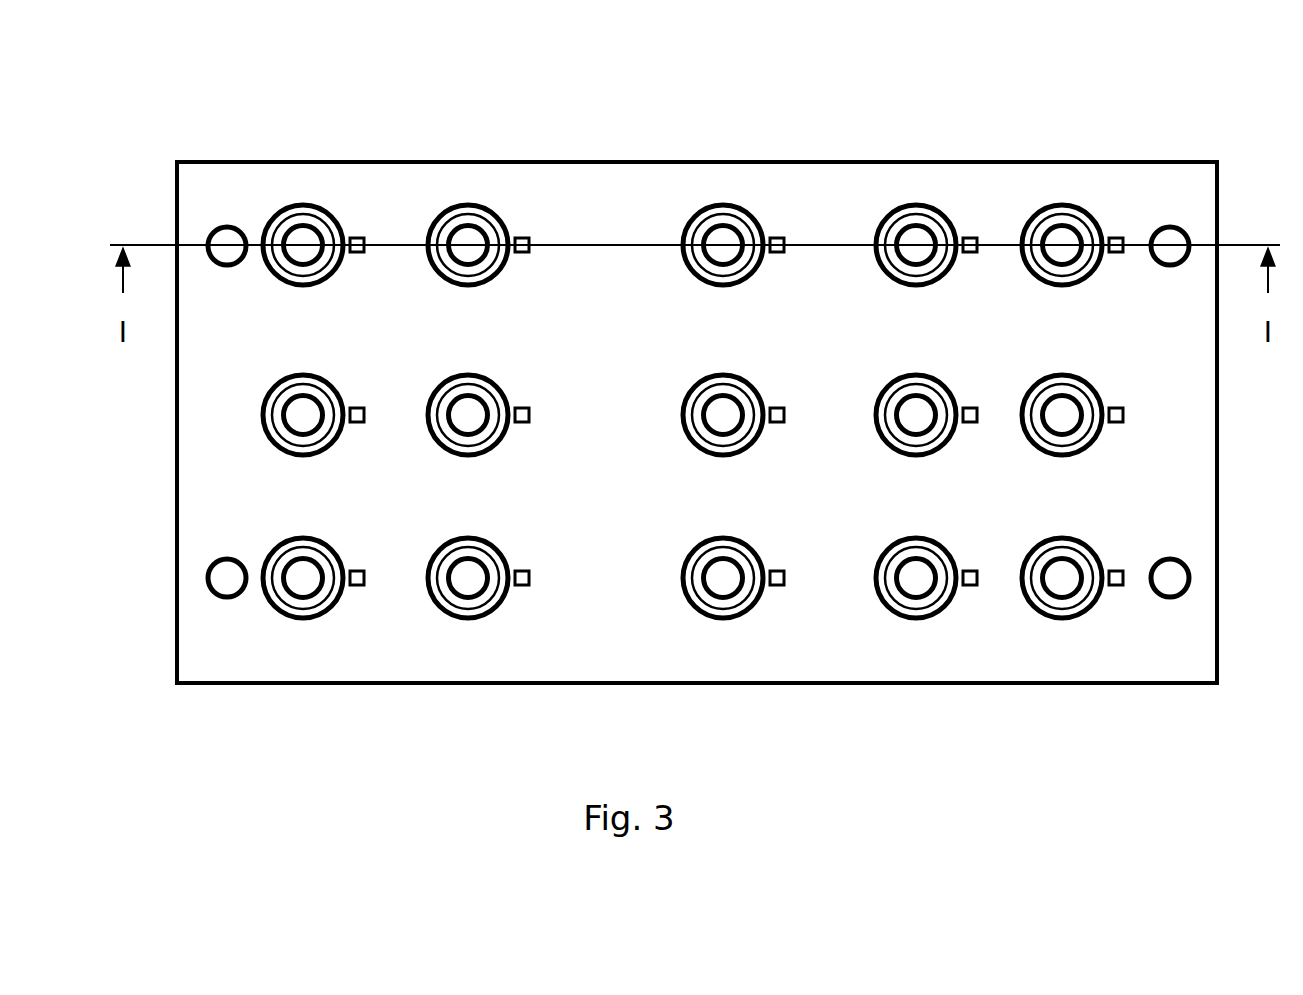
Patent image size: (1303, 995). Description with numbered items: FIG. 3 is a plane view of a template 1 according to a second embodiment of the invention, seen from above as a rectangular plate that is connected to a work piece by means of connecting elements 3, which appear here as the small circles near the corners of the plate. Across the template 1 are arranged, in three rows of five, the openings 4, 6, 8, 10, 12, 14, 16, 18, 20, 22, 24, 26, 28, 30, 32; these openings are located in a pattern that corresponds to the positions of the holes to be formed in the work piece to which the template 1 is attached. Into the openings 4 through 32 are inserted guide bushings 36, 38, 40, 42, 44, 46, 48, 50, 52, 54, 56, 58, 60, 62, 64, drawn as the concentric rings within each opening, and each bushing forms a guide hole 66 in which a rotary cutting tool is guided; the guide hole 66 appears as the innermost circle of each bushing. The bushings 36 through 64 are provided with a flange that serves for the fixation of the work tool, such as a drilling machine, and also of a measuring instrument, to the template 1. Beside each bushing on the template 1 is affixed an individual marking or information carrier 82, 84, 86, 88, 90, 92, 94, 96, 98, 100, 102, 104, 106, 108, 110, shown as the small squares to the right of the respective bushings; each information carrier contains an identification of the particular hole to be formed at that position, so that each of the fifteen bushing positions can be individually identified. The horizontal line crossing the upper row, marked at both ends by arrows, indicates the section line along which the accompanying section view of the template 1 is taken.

The template 1 is at (1183, 162).
The connecting element 3 is at (213, 235).
The opening 4 is at (293, 191).
The opening 6 is at (458, 196).
The opening 8 is at (713, 195).
The opening 10 is at (900, 195).
The opening 12 is at (1054, 195).
The opening 14 is at (289, 391).
The opening 16 is at (453, 391).
The opening 18 is at (707, 391).
The opening 20 is at (900, 391).
The opening 22 is at (1051, 391).
The opening 24 is at (292, 554).
The opening 26 is at (457, 554).
The opening 28 is at (711, 554).
The opening 30 is at (904, 554).
The opening 32 is at (1051, 554).
The guide bushing 36 is at (290, 214).
The guide bushing 38 is at (450, 207).
The guide bushing 40 is at (705, 207).
The guide bushing 42 is at (898, 207).
The guide bushing 44 is at (1045, 207).
The guide bushing 46 is at (280, 382).
The guide bushing 48 is at (445, 382).
The guide bushing 50 is at (700, 382).
The guide bushing 52 is at (893, 382).
The guide bushing 54 is at (1040, 382).
The guide bushing 56 is at (295, 540).
The guide bushing 58 is at (446, 545).
The guide bushing 60 is at (700, 545).
The guide bushing 62 is at (893, 545).
The guide bushing 64 is at (1040, 545).
The guide hole 66 is at (316, 228).
The information carrier 82 is at (357, 238).
The information carrier 84 is at (520, 238).
The information carrier 86 is at (775, 238).
The information carrier 88 is at (968, 238).
The information carrier 90 is at (1115, 238).
The information carrier 92 is at (356, 408).
The information carrier 94 is at (521, 408).
The information carrier 96 is at (776, 408).
The information carrier 98 is at (969, 408).
The information carrier 100 is at (1116, 408).
The information carrier 102 is at (356, 571).
The information carrier 104 is at (521, 571).
The information carrier 106 is at (776, 571).
The information carrier 108 is at (969, 571).
The information carrier 110 is at (1116, 571).